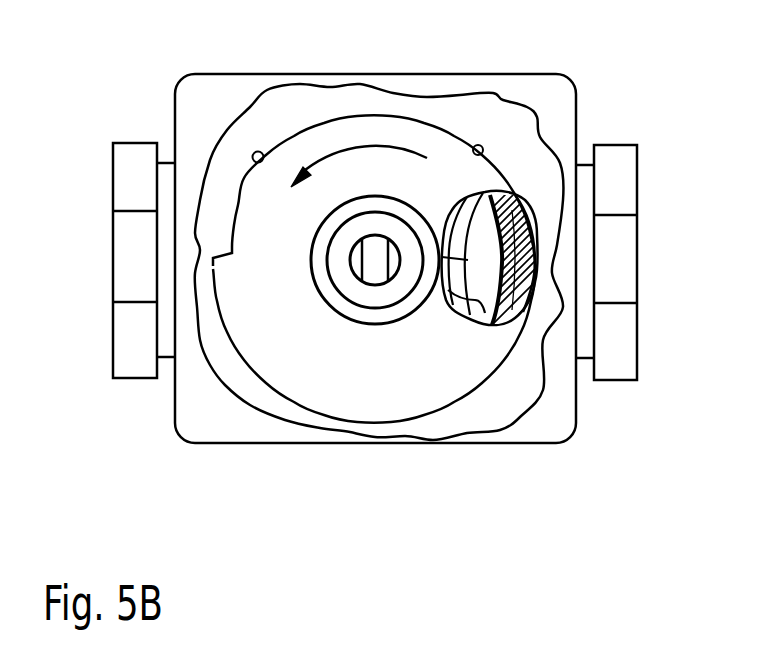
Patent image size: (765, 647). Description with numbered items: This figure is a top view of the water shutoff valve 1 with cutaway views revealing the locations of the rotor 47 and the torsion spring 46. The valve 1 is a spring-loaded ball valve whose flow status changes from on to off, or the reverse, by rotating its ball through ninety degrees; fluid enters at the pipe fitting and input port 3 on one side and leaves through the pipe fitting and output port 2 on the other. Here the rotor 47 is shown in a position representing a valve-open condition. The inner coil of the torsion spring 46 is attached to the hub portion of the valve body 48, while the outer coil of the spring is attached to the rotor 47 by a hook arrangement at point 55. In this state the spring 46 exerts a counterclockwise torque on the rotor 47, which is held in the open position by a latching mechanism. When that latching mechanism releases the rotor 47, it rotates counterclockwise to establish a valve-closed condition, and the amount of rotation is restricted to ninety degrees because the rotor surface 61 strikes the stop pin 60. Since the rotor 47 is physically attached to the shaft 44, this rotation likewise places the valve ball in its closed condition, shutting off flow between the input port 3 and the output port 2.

The water shutoff valve 1 is at (131, 56).
The pipe fitting and output port 2 is at (637, 325).
The pipe fitting and input port 3 is at (121, 243).
The shaft 44 is at (373, 270).
The torsion spring 46 is at (492, 322).
The rotor 47 is at (438, 378).
The valve body 48 is at (437, 300).
The hook arrangement point 55 is at (503, 286).
The stop pin 60 is at (262, 152).
The rotor surface 61 is at (479, 145).